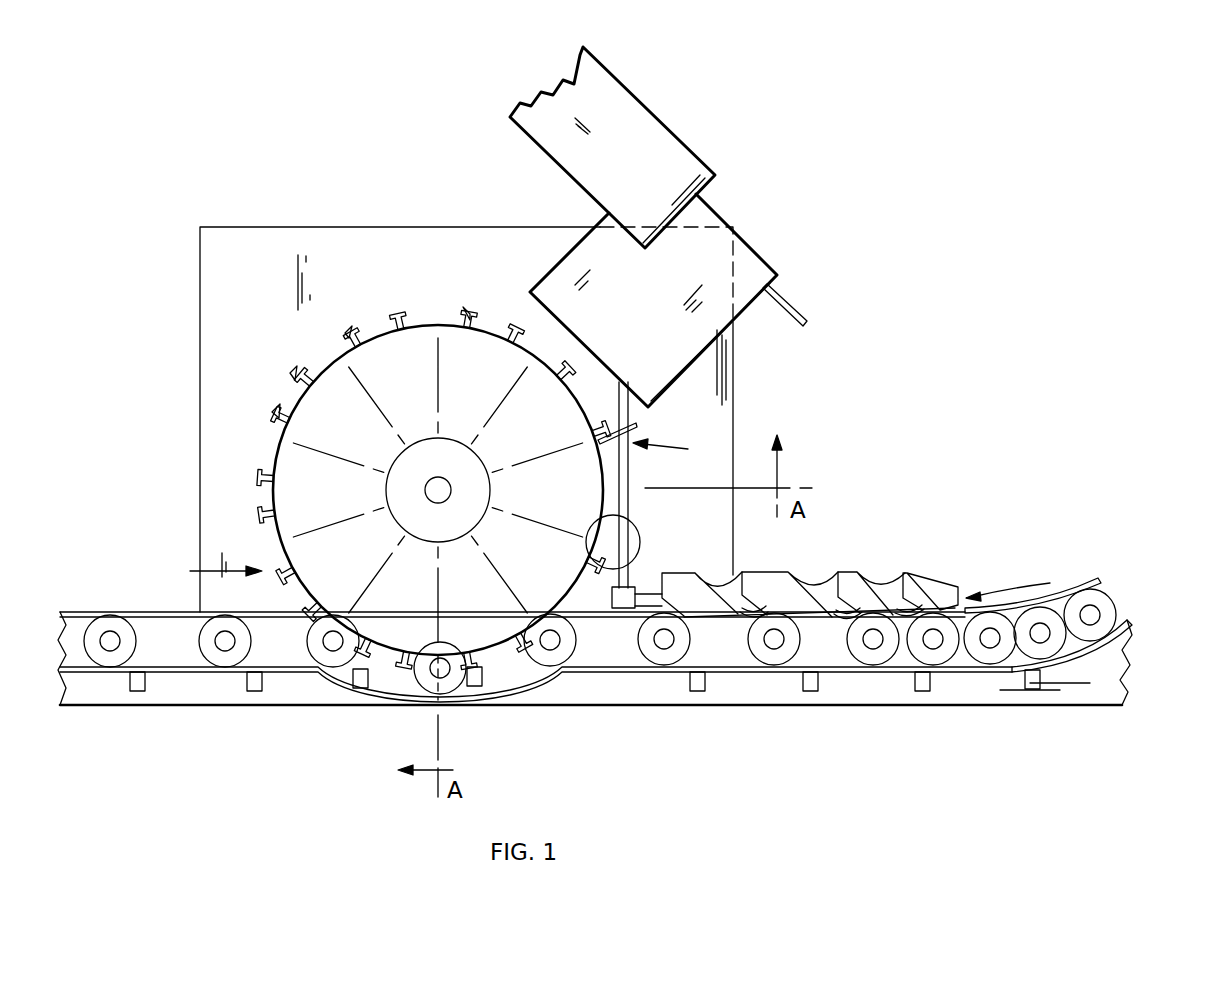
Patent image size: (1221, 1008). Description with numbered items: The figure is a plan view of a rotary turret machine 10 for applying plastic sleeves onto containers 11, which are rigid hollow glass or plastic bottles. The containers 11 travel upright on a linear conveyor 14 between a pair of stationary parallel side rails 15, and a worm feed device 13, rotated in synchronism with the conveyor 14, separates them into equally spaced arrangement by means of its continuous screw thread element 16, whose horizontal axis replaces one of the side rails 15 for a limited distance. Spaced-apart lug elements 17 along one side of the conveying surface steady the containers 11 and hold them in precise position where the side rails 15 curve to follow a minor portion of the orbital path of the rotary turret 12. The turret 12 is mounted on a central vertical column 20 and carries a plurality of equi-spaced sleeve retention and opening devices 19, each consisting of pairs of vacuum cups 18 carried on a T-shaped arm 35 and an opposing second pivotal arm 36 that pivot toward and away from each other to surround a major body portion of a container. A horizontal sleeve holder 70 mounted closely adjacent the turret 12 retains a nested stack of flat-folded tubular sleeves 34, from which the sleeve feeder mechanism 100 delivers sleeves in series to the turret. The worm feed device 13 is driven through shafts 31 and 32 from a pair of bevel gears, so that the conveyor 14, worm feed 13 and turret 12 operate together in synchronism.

The rotary turret machine 10 is at (743, 405).
The containers 11 is at (84, 645).
The rotary turret 12 is at (413, 391).
The worm feed device 13 is at (852, 562).
The linear conveyor 14 is at (973, 683).
The stationary parallel side rails 15 is at (1128, 626).
The screw thread element 16 is at (782, 572).
The lug elements 17 is at (803, 690).
The vacuum cups 18 is at (469, 316).
The sleeve retention and opening device 19 is at (438, 516).
The central vertical column 20 is at (441, 485).
The shaft 31 is at (629, 468).
The shaft 32 is at (648, 590).
The tubular sleeves 34 is at (637, 425).
The arm 35 is at (273, 514).
The second pivotal arm 36 is at (296, 575).
The horizontal sleeve holder 70 is at (647, 112).
The sleeve feeder mechanism 100 is at (742, 252).